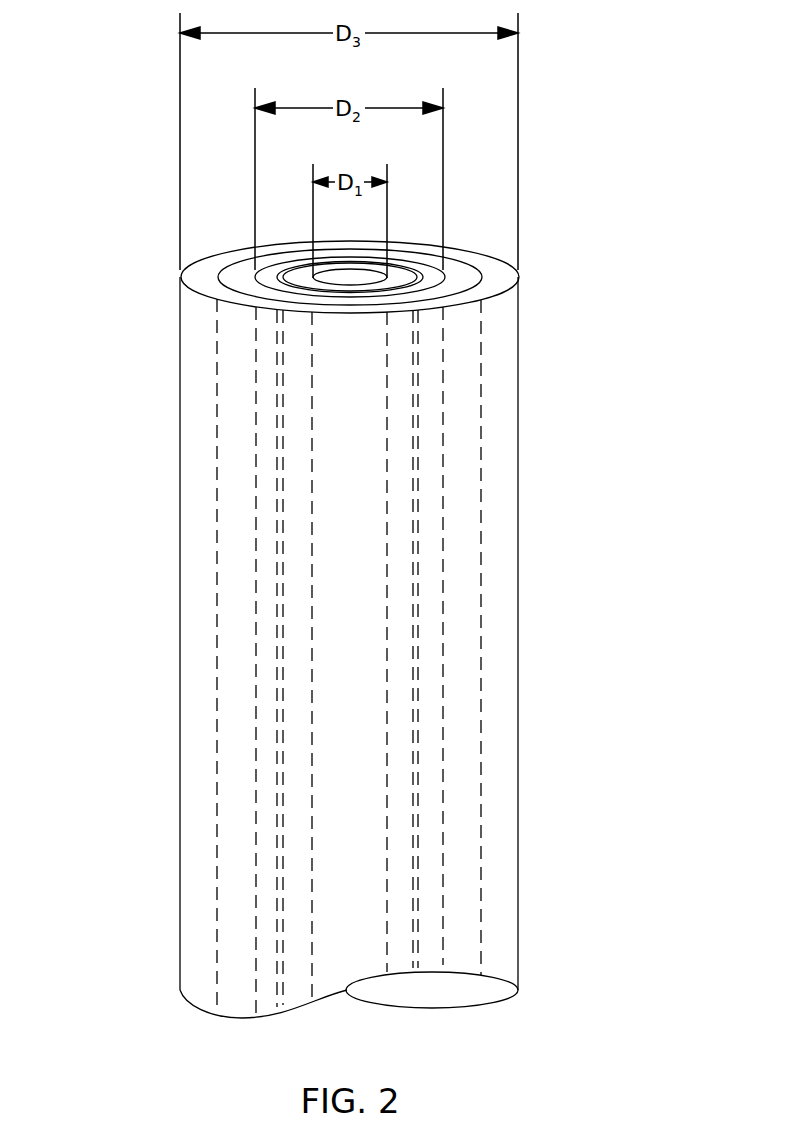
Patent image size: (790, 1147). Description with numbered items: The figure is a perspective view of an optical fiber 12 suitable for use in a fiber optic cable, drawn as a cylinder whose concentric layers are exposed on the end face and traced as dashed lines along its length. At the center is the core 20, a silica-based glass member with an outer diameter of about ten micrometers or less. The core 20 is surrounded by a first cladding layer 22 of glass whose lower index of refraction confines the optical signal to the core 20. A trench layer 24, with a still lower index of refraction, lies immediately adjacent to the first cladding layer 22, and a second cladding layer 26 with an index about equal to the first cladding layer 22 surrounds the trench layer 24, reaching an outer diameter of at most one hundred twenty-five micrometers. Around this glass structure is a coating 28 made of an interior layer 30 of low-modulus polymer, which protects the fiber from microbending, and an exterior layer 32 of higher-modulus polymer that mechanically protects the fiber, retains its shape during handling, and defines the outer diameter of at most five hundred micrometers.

The optical fiber 12 is at (125, 408).
The core 20 is at (387, 407).
The first cladding layer 22 is at (413, 547).
The trench layer 24 is at (277, 765).
The second cladding layer 26 is at (255, 678).
The coating 28 is at (520, 771).
The interior layer 30 is at (481, 706).
The exterior layer 32 is at (518, 905).